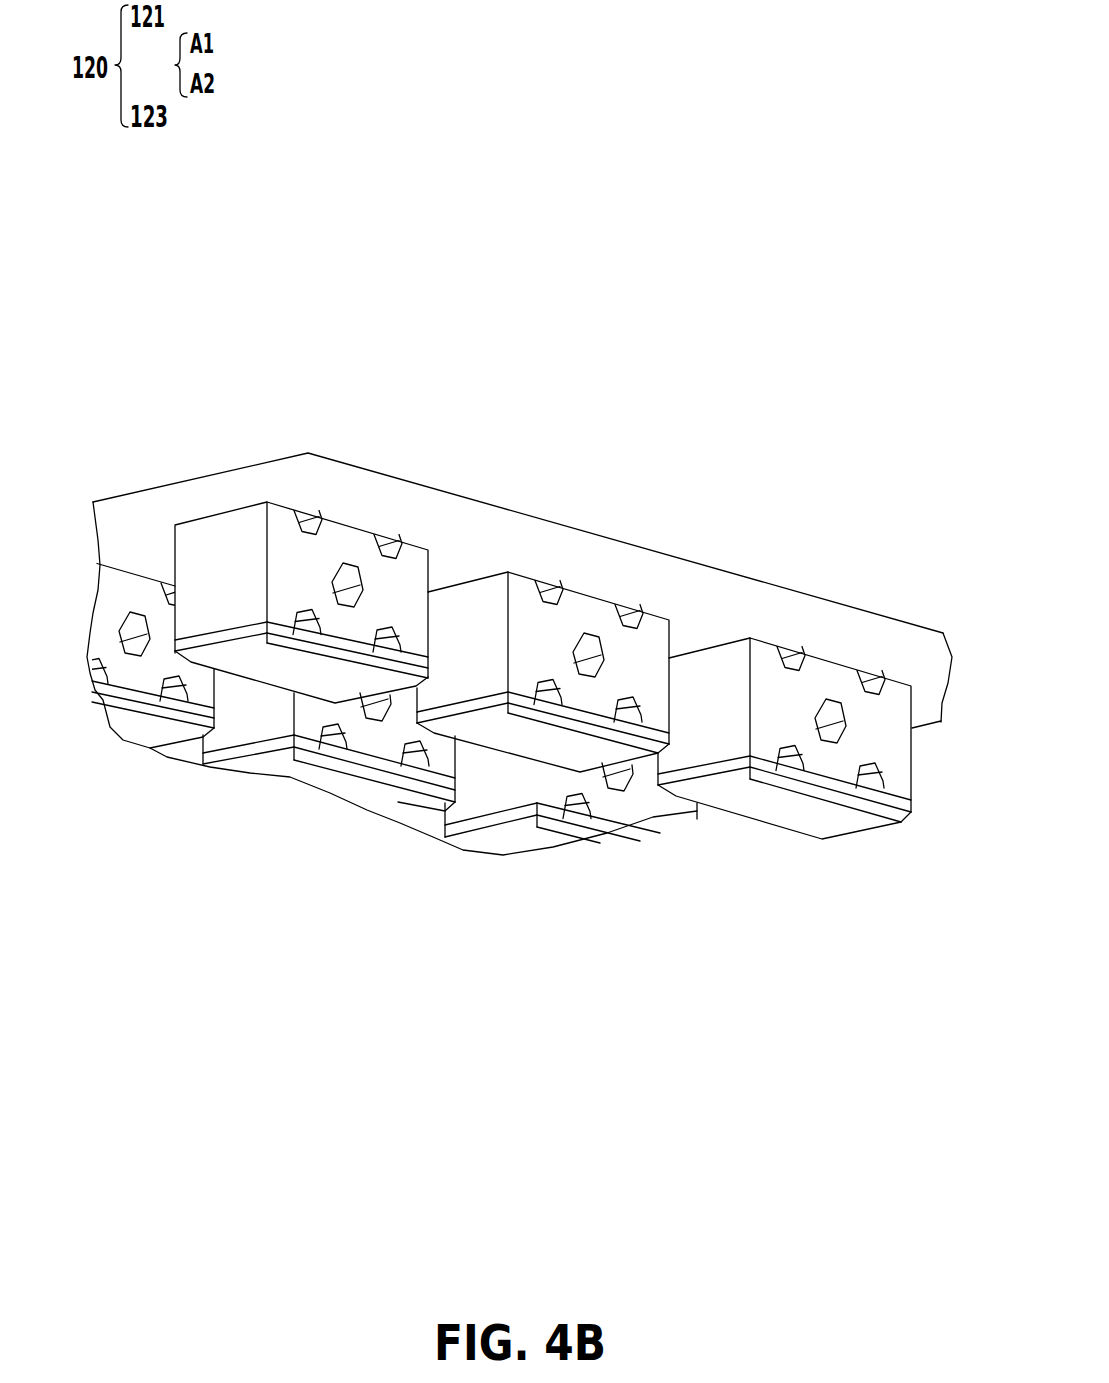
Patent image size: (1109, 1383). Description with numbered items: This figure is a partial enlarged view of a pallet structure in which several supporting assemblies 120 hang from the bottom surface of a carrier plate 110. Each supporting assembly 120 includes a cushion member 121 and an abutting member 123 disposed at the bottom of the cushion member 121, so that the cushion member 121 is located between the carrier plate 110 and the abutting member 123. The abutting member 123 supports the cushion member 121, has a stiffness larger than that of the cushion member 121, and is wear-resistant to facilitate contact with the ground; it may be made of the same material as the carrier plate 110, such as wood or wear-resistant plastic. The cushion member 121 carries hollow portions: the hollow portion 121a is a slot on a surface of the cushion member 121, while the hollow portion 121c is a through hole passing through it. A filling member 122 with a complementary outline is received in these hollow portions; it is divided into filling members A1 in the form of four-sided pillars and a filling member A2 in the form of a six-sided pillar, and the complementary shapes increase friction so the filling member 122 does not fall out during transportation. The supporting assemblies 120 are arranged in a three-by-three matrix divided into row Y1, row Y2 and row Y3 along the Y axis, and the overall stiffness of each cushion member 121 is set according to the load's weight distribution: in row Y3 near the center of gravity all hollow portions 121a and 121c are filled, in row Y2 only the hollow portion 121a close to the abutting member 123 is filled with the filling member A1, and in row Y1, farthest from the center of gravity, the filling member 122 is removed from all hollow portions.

The carrier plate 110 is at (200, 476).
The supporting assembly 120 is at (741, 339).
The cushion member 121 is at (200, 612).
The hollow portion 121a is at (306, 518).
The hollow portion 121c is at (377, 717).
The filling member 122 is at (279, 353).
The abutting member 123 is at (293, 673).
The filling member A1 is at (790, 657).
The filling member A2 is at (833, 723).
The row Y1 is at (399, 502).
The row Y2 is at (599, 568).
The row Y3 is at (837, 629).